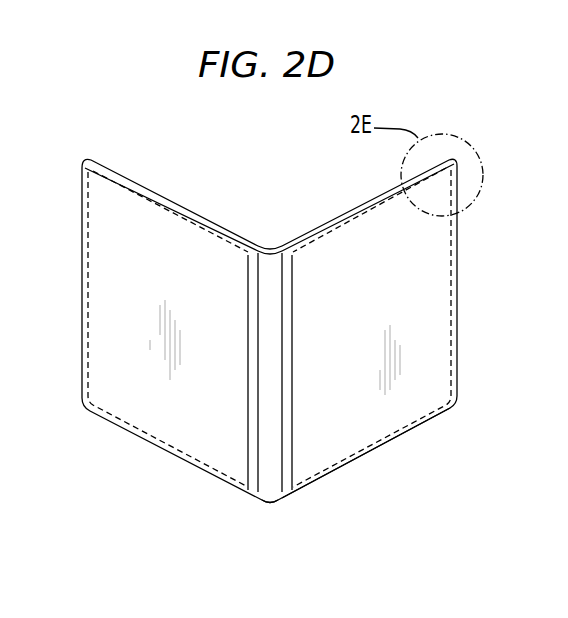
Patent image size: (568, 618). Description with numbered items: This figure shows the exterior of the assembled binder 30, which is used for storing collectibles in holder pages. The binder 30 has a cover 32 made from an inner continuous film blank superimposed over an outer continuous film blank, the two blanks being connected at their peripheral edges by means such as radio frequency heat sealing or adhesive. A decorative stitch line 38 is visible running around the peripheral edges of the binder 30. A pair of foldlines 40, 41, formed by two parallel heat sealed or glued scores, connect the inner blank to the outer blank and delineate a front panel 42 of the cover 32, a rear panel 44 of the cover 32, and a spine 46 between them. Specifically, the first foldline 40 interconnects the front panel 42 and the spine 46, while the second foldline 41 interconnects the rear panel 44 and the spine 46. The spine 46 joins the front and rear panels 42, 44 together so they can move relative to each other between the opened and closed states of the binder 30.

The binder 30 is at (458, 340).
The cover 32 is at (388, 438).
The decorative stitch line 38 is at (165, 207).
The first foldline 40 is at (284, 246).
The second foldline 41 is at (256, 246).
The front panel 42 is at (428, 272).
The rear panel 44 is at (112, 256).
The spine 46 is at (268, 497).